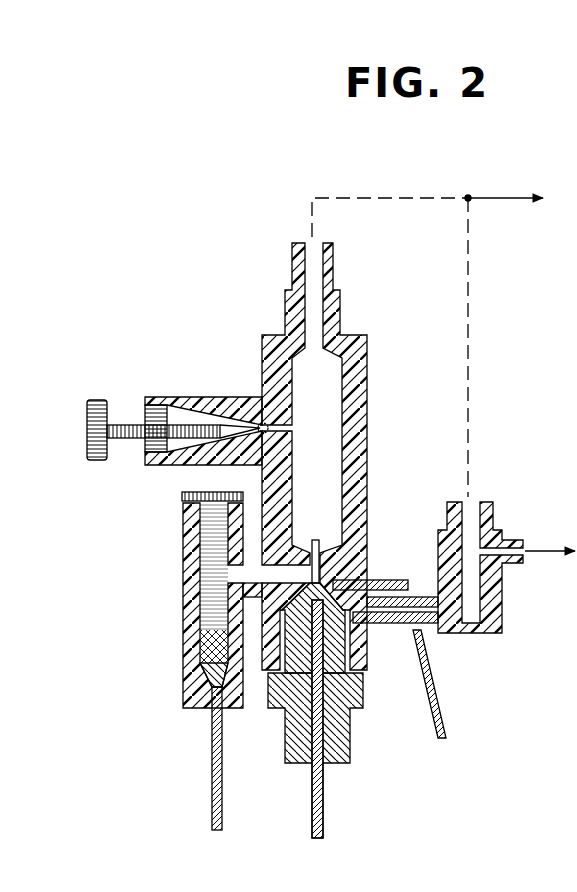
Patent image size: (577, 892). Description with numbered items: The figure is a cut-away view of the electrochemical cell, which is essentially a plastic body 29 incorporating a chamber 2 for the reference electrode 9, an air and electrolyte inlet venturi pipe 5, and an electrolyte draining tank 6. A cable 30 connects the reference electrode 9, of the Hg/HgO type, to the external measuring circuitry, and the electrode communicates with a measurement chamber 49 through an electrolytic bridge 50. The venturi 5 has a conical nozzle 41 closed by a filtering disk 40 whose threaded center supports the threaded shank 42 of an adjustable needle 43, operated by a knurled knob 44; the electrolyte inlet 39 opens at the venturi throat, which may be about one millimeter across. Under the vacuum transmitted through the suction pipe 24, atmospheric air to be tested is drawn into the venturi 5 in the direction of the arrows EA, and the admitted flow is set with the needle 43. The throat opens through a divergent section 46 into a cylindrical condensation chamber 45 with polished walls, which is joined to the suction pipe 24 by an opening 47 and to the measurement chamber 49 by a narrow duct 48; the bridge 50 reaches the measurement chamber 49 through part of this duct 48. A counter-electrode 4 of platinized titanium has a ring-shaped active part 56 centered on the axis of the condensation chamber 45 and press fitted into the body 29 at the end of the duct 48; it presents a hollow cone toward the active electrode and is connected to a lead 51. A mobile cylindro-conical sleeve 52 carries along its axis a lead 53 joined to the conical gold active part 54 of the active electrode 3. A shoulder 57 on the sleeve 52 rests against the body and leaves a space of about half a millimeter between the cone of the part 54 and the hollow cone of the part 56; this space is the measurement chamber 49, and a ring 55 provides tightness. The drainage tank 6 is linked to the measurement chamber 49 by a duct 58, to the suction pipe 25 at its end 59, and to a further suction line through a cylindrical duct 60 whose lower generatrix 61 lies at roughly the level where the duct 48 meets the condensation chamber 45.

The chamber 2 is at (173, 585).
The active electrode 3 is at (333, 784).
The counter-electrode 4 is at (390, 571).
The venturi pipe 5 is at (176, 400).
The electrolyte draining tank 6 is at (506, 546).
The reference electrode 9 is at (203, 730).
The suction pipe 24 is at (365, 194).
The suction pipe 25 is at (470, 315).
The plastic body 29 is at (272, 313).
The cable 30 is at (212, 797).
The electrolyte inlet 39 is at (258, 420).
The filtering disk 40 is at (137, 407).
The conical nozzle 41 is at (178, 405).
The threaded shank 42 is at (140, 440).
The adjustable needle 43 is at (224, 426).
The knurled knob 44 is at (87, 436).
The condensation chamber 45 is at (322, 390).
The divergent section 46 is at (277, 425).
The opening 47 is at (313, 268).
The duct 48 is at (313, 557).
The measurement chamber 49 is at (306, 578).
The electrolytic bridge 50 is at (256, 545).
The lead 51 is at (440, 703).
The mobile cylindro-conical sleeve 52 is at (334, 674).
The lead 53 is at (324, 814).
The active part 54 is at (313, 642).
The ring 55 is at (363, 652).
The active part 56 is at (342, 577).
The shoulder 57 is at (268, 675).
The duct 58 is at (428, 613).
The end 59 is at (485, 486).
The cylindrical duct 60 is at (508, 548).
The lower generatrix 61 is at (523, 556).
The arrows EA is at (135, 407).